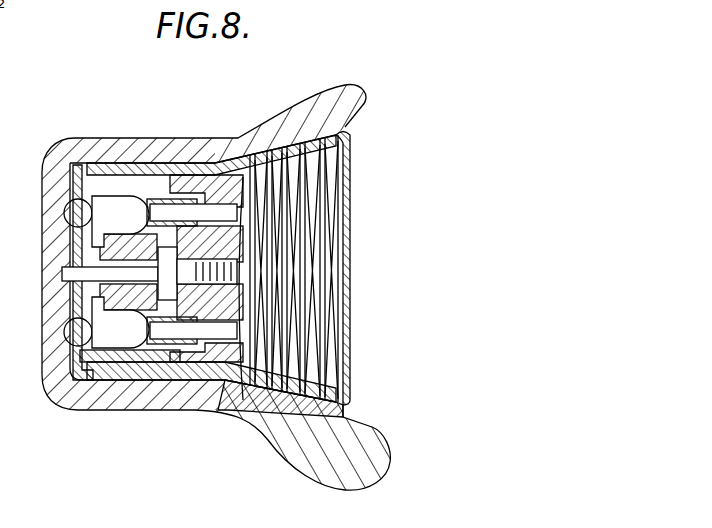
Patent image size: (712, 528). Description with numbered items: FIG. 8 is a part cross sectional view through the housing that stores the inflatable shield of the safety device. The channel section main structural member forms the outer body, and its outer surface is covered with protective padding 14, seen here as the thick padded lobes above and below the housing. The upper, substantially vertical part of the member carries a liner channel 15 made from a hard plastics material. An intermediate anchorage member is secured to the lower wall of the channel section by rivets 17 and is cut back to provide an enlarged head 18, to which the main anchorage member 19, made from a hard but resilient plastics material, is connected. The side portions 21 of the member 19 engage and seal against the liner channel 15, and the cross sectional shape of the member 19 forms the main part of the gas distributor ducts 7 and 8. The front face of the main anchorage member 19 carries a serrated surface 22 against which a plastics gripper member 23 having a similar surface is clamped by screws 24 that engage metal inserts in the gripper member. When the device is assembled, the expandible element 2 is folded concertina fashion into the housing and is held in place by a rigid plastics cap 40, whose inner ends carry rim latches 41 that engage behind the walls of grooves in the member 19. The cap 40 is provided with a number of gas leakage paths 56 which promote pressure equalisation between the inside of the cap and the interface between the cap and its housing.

The expandible element 2 is at (304, 160).
The gas distributor duct 7 is at (102, 202).
The gas distributor duct 8 is at (100, 340).
The protective padding 14 is at (377, 476).
The liner channel 15 is at (85, 170).
The rivets 17 is at (85, 275).
The enlarged head 18 is at (130, 322).
The main anchorage member 19 is at (171, 176).
The side portions 21 is at (130, 178).
The serrated surface 22 is at (235, 232).
The gripper member 23 is at (235, 310).
The screws 24 is at (240, 270).
The cap 40 is at (348, 364).
The rim latches 41 is at (185, 362).
The gas leakage paths 56 is at (245, 380).